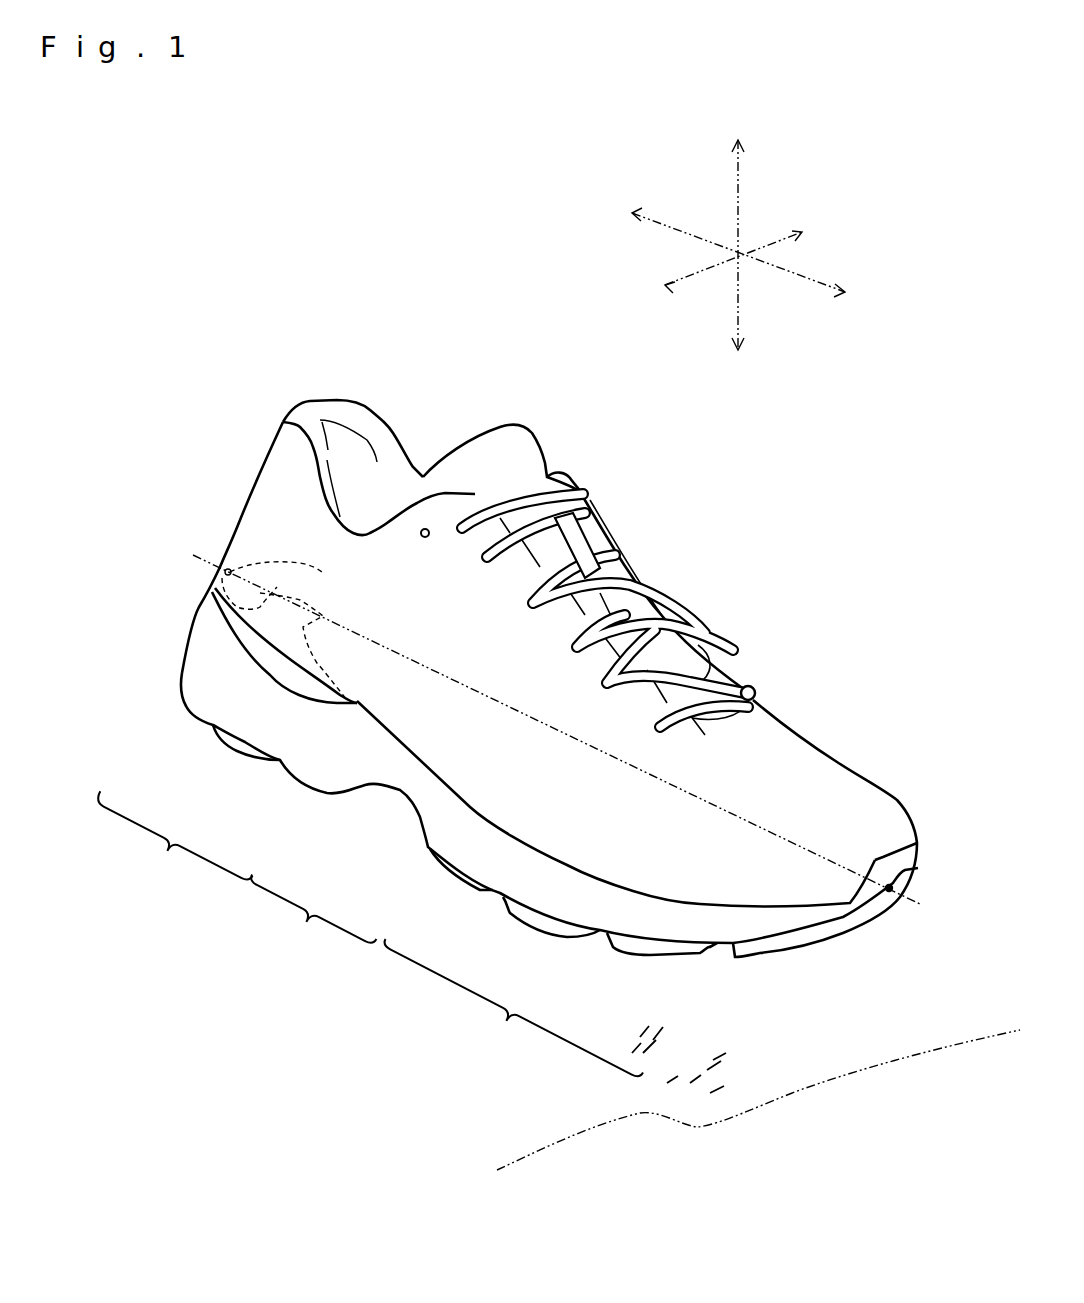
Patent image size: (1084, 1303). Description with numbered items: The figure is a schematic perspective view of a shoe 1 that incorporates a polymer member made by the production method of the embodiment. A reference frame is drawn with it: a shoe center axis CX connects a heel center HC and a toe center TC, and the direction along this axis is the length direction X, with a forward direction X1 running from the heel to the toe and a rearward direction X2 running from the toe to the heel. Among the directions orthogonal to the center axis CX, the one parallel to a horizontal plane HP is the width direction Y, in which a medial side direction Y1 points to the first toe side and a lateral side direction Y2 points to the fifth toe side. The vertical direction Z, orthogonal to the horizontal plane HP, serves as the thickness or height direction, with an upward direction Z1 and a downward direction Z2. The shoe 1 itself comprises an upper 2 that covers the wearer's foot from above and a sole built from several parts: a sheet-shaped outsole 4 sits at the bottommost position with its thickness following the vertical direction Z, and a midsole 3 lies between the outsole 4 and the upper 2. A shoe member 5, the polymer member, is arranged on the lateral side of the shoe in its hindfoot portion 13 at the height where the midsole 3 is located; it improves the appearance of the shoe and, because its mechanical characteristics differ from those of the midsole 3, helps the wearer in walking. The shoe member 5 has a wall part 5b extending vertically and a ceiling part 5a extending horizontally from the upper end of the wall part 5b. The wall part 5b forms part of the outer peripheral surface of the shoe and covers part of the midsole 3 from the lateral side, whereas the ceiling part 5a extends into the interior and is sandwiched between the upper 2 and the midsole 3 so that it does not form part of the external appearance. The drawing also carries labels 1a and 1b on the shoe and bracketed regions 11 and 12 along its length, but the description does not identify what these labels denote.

The shoe 1 is at (432, 378).
The forefoot region of midsole 1a is at (398, 832).
The toe region 1b is at (773, 700).
The upper 2 is at (815, 763).
The midsole 3 is at (317, 713).
The outsole 4 is at (233, 745).
The shoe member 5 is at (143, 627).
The ceiling part 5a is at (213, 592).
The wall part 5b is at (215, 637).
The forefoot portion 11 is at (510, 1013).
The midfoot portion 12 is at (310, 915).
The hindfoot portion 13 is at (172, 841).
The heel center HC is at (218, 562).
The toe center TC is at (918, 868).
The shoe center axis CX is at (910, 907).
The horizontal plane HP is at (758, 1098).
The length direction X is at (758, 262).
The forward direction X1 is at (824, 275).
The rearward direction X2 is at (661, 214).
The width direction Y is at (750, 241).
The medial side direction Y1 is at (784, 225).
The lateral side direction Y2 is at (687, 269).
The vertical direction Z is at (739, 229).
The upward direction Z1 is at (754, 170).
The downward direction Z2 is at (754, 325).